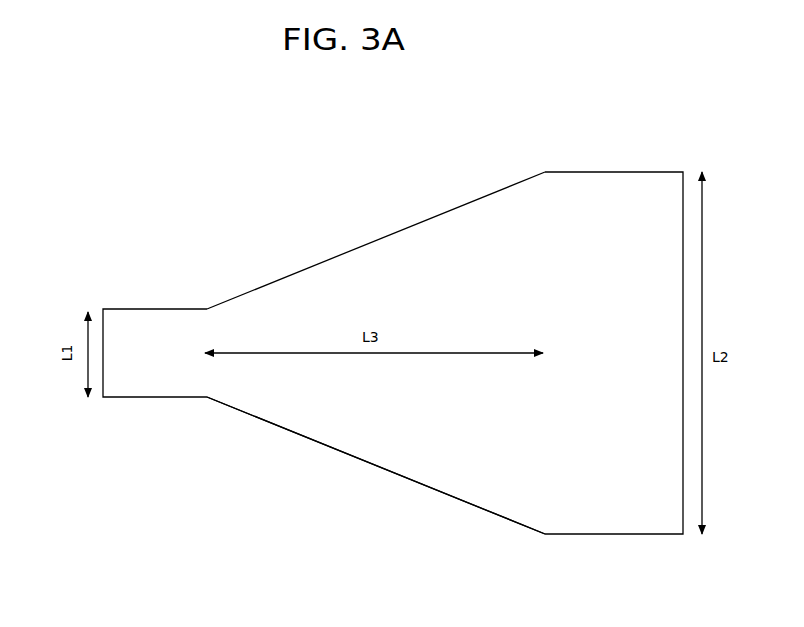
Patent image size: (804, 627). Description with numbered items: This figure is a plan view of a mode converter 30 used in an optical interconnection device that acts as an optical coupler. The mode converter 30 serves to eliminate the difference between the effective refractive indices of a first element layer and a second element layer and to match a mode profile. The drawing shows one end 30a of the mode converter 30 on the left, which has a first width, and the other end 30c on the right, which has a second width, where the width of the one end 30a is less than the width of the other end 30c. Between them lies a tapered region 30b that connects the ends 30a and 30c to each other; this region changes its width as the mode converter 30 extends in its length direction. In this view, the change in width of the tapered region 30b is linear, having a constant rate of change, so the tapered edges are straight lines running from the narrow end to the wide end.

The mode converter 30 is at (258, 190).
The one end of the mode converter 30a is at (149, 330).
The tapered region 30b is at (377, 447).
The other end of the mode converter 30c is at (608, 188).